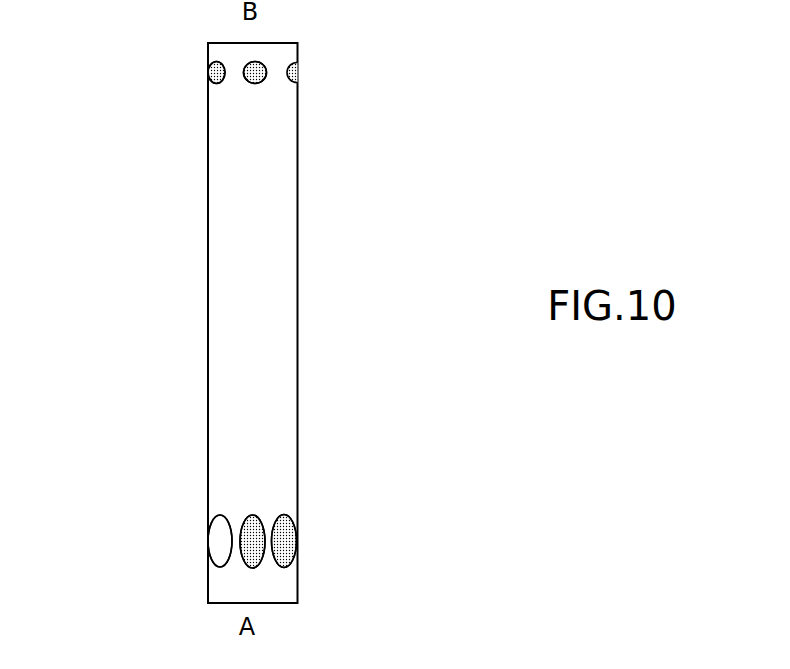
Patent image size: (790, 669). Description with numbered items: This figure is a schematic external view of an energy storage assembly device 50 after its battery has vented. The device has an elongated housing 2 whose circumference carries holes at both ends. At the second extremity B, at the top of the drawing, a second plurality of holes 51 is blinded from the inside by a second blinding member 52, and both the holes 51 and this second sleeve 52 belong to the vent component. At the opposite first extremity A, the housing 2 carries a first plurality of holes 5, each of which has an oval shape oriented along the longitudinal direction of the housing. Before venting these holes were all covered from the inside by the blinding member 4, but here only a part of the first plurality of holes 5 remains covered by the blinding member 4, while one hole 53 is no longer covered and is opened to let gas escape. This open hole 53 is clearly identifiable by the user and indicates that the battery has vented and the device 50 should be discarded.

The housing 2 is at (298, 292).
The blinding member 4 is at (273, 527).
The first plurality of holes 5 is at (308, 510).
The energy storage assembly device 50 is at (407, 138).
The second plurality of holes 51 is at (178, 92).
The second blinding member 52 is at (246, 80).
The one hole 53 is at (223, 540).